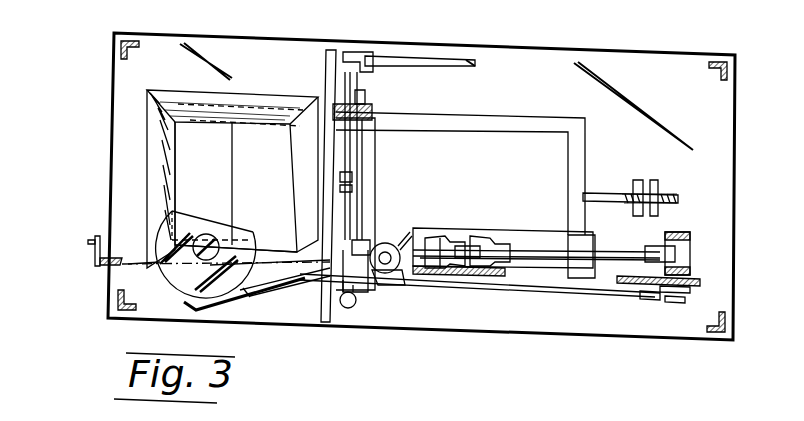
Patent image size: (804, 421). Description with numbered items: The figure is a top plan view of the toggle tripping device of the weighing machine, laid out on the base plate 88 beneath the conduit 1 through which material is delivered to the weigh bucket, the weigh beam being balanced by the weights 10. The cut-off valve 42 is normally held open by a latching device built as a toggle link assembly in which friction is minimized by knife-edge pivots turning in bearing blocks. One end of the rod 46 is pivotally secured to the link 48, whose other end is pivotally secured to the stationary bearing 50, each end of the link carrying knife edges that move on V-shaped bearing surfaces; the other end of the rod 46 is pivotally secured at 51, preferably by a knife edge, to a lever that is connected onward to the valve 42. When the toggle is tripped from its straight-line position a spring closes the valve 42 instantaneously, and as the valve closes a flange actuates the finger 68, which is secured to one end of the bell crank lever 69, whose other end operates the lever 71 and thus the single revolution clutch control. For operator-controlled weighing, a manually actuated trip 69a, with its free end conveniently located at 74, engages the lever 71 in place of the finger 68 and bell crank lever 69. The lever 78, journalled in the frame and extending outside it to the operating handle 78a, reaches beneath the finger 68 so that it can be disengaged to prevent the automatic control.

The conduit 1 is at (254, 106).
The weights 10 is at (660, 188).
The cut-off valve 42 is at (178, 280).
The rod 46 is at (520, 248).
The link 48 is at (649, 250).
The stationary bearing 50 is at (677, 238).
The pivot 51 is at (451, 246).
The finger 68 is at (364, 193).
The bell crank lever 69 is at (363, 88).
The manually actuated trip 69a is at (343, 190).
The lever 71 is at (418, 63).
The free end of trip 74 is at (356, 302).
The lever 78 is at (301, 274).
The operating handle 78a is at (100, 240).
The base plate 88 is at (733, 150).